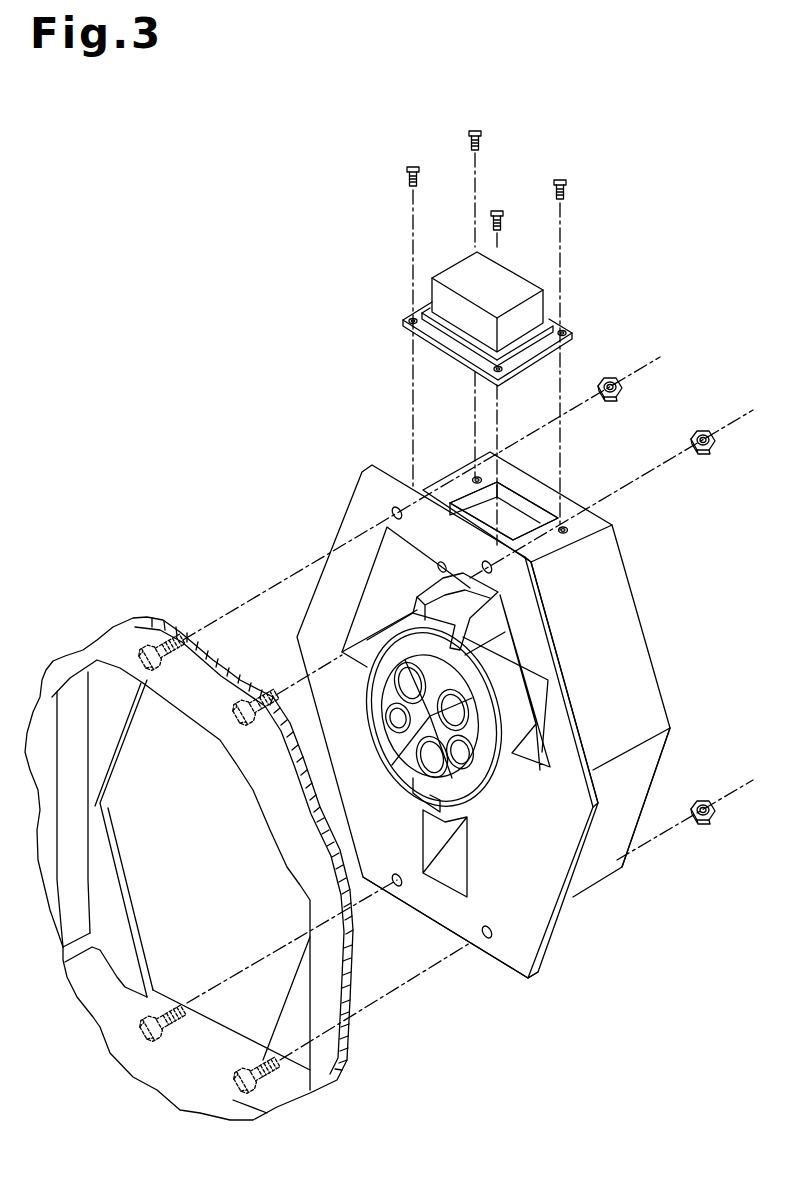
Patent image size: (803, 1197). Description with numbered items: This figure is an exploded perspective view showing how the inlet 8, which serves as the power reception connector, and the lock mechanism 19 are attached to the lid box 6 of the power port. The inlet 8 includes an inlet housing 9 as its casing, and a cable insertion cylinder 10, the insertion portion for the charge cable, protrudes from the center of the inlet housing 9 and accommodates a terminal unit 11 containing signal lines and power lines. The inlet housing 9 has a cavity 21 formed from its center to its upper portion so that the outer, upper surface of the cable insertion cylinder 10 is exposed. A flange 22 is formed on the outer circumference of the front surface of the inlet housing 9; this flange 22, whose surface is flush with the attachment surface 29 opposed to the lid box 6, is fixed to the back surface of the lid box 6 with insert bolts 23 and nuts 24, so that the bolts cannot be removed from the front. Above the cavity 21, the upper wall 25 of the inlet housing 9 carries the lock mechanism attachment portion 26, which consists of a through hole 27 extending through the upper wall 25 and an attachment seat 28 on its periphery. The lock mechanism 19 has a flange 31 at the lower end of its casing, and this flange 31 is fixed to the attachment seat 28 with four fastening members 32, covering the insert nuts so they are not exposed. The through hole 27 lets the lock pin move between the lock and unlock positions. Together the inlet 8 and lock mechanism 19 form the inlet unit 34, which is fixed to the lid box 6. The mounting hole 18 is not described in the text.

The lid box 6 is at (323, 1084).
The inlet 8 is at (349, 503).
The inlet housing 9 is at (641, 645).
The cable insertion cylinder 10 is at (372, 729).
The terminal unit 11 is at (390, 752).
The bolt hole 18 is at (491, 572).
The lock mechanism 19 is at (524, 291).
The cavity 21 is at (443, 560).
The flange 22 is at (556, 644).
The insert bolts 23 is at (233, 703).
The nuts 24 is at (626, 390).
The upper wall 25 is at (554, 498).
The lock mechanism attachment portion 26 is at (601, 405).
The through hole 27 is at (513, 490).
The attachment seat 28 is at (527, 493).
The attachment surface 29 is at (506, 962).
The flange 31 is at (447, 352).
The fastening members 32 is at (416, 167).
The inlet unit 34 is at (664, 757).